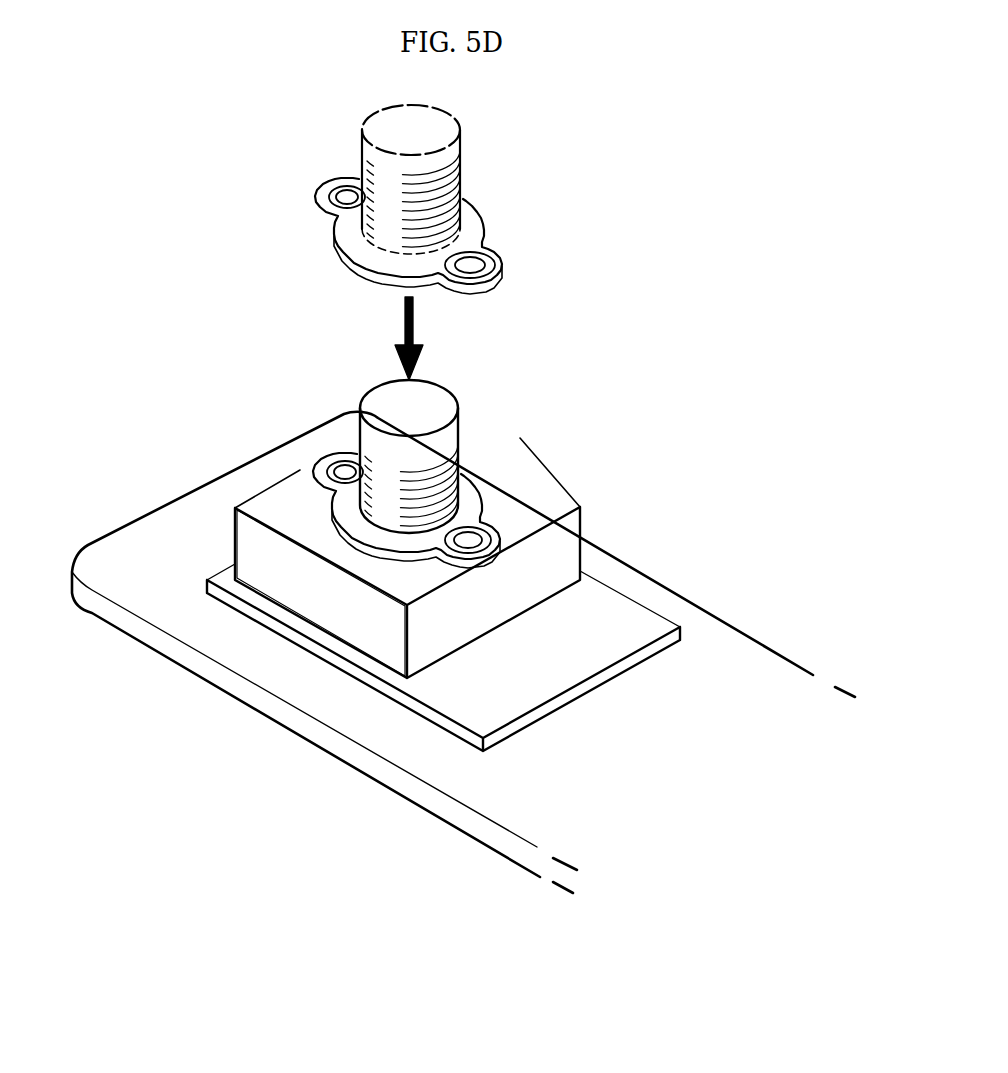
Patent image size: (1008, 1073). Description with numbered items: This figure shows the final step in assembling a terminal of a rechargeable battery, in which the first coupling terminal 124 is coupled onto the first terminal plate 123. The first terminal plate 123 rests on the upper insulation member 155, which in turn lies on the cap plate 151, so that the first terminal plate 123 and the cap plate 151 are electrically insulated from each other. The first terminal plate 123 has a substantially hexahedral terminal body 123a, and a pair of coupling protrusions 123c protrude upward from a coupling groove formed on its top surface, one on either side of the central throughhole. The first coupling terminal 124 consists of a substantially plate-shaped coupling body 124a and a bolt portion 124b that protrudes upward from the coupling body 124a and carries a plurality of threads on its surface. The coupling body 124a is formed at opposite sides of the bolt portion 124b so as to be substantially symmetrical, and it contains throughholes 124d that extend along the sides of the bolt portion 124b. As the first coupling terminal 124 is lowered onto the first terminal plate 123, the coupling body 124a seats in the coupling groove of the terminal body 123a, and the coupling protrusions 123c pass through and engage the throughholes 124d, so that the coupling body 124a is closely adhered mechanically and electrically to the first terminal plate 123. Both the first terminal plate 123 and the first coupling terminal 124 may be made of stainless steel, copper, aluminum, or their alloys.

The cap plate 151 is at (170, 523).
The upper insulation member 155 is at (540, 677).
The first terminal plate 123 is at (489, 621).
The terminal body 123a is at (437, 628).
The coupling protrusion 123c is at (473, 537).
The first coupling terminal 124 is at (461, 424).
The coupling body 124a is at (467, 505).
The bolt portion 124b is at (458, 433).
The throughhole 124d is at (467, 224).